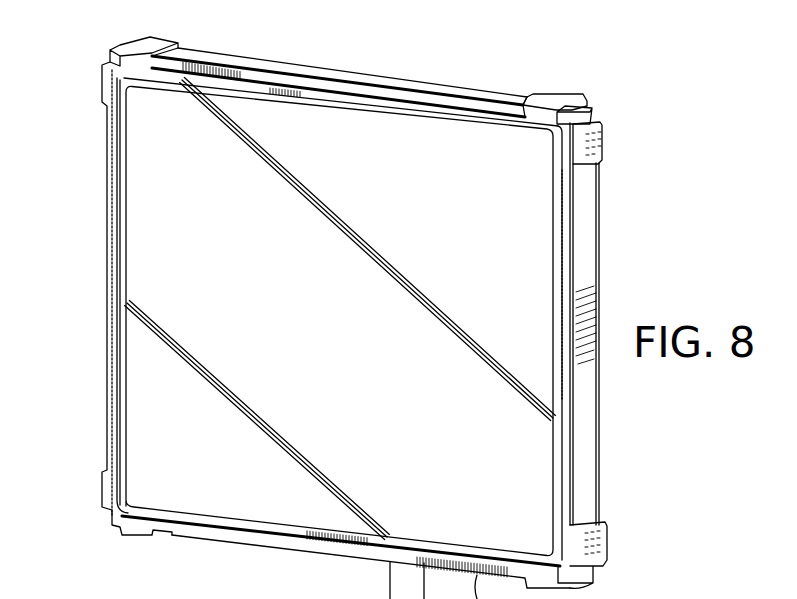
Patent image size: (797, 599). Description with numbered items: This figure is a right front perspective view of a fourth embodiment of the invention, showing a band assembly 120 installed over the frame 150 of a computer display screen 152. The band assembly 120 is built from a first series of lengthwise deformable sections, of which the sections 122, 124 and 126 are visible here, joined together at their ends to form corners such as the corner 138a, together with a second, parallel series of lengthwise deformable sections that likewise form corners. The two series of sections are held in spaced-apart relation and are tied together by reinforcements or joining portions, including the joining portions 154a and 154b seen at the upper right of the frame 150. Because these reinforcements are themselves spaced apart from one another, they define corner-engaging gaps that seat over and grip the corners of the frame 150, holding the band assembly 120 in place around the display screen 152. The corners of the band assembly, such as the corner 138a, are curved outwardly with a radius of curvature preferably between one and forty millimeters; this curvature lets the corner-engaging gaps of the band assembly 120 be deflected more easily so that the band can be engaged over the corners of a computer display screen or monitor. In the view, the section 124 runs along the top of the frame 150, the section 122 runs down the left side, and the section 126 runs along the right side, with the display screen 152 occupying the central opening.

The band assembly 120 is at (80, 118).
The lengthwise deformable section 122 is at (113, 308).
The lengthwise deformable section 124 is at (288, 82).
The lengthwise deformable section 126 is at (563, 245).
The corner 138a is at (259, 543).
The frame 150 is at (585, 438).
The display screen 152 is at (467, 153).
The reinforcement or joining portion 154a is at (556, 88).
The reinforcement or joining portion 154b is at (605, 137).